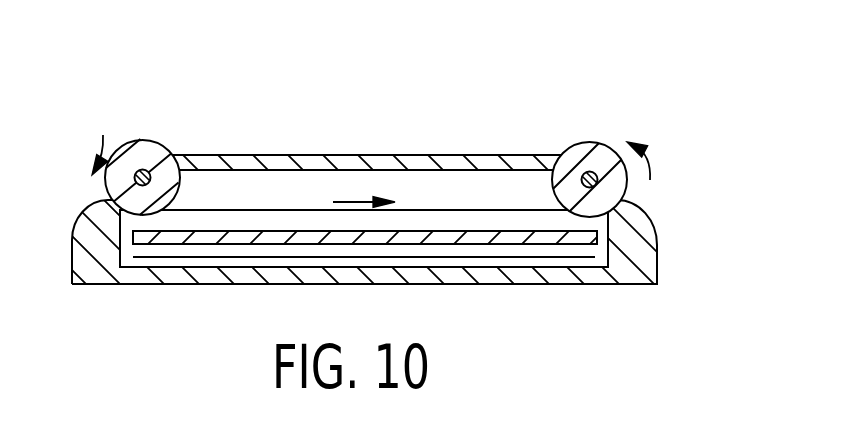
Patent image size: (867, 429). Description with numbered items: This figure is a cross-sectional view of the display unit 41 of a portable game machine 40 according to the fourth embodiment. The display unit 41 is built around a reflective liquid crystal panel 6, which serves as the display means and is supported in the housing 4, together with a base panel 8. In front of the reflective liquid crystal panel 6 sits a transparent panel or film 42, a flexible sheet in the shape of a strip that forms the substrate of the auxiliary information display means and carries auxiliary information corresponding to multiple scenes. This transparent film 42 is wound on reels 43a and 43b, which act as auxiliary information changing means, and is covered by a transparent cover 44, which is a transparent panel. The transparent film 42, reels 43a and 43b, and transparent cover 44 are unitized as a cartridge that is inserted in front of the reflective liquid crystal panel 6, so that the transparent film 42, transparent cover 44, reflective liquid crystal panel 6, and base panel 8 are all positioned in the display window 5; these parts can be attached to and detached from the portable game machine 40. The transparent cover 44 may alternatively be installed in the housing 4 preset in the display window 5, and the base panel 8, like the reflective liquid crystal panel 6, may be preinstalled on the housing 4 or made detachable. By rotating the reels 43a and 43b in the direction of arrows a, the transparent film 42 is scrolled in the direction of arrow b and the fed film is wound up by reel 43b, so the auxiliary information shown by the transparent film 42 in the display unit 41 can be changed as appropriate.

The portable game machine 40 is at (391, 179).
The display unit 41 is at (391, 229).
The display window 5 is at (366, 126).
The transparent cover 44 is at (438, 157).
The reel 43a is at (582, 148).
The reel 43b is at (157, 150).
The housing 4 is at (648, 255).
The reflective liquid crystal panel 6 is at (588, 237).
The base panel 8 is at (570, 260).
The transparent film 42 is at (208, 212).